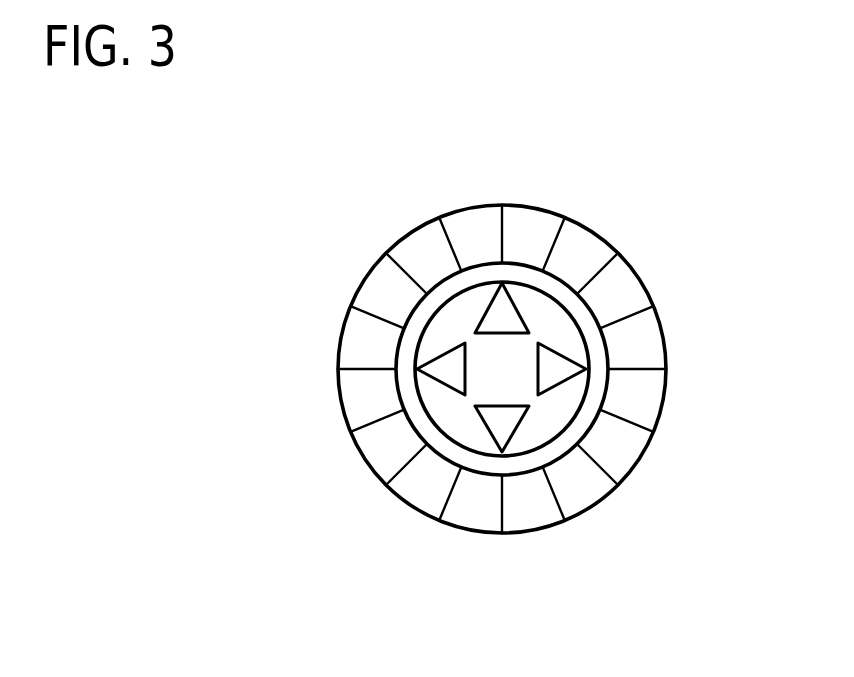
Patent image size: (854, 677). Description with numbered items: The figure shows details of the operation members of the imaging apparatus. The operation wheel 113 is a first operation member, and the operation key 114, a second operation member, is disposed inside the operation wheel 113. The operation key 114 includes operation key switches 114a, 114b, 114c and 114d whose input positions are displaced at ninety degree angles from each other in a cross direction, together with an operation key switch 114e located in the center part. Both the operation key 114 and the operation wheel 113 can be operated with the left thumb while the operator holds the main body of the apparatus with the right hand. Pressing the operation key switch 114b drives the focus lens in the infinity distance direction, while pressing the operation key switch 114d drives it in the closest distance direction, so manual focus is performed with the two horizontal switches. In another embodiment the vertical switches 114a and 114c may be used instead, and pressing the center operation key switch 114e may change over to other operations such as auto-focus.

The operation wheel 113 is at (378, 452).
The operation key 114 is at (553, 317).
The operation key switch 114a is at (499, 310).
The operation key switch 114b is at (562, 365).
The operation key switch 114c is at (497, 422).
The operation key switch 114d is at (442, 373).
The operation key switch 114e is at (507, 388).